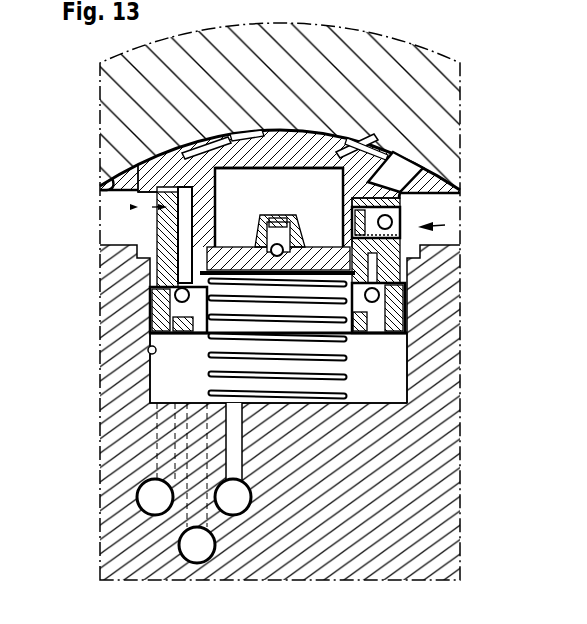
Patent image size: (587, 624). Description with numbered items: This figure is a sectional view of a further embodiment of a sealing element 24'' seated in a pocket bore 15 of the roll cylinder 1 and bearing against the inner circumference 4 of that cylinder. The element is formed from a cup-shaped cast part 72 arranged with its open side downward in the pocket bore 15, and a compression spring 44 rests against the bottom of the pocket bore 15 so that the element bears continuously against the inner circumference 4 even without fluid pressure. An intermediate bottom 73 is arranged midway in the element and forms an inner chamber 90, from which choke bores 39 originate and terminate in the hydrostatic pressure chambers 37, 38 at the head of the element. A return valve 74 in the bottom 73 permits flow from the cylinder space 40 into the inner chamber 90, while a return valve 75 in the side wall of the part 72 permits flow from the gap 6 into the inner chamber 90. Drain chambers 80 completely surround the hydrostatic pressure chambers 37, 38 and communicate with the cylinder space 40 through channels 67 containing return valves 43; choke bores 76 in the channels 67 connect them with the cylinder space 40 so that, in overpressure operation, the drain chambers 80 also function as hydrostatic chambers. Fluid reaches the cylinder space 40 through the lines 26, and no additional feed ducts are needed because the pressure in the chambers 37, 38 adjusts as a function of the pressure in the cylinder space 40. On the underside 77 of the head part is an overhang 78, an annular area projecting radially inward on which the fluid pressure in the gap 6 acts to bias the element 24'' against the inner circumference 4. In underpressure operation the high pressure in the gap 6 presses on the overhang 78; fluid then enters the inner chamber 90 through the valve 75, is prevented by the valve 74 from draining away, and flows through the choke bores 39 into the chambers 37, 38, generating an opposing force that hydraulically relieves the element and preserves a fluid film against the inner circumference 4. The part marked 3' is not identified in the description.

The roll cylinder 1 is at (413, 57).
The housing body 3' is at (459, 324).
The inner circumference 4 is at (108, 188).
The gap 6 is at (118, 220).
The pocket bore 15 is at (148, 350).
The sealing element 24'' is at (465, 225).
The lines 26 is at (187, 545).
The hydrostatic pressure chamber 37 is at (200, 140).
The hydrostatic pressure chamber 38 is at (368, 142).
The choke bores 39 is at (223, 140).
The cylinder space 40 is at (165, 373).
The return valves 43 is at (170, 303).
The compression spring 44 is at (323, 360).
The channels 67 is at (185, 238).
The cup-shaped cast part 72 is at (423, 242).
The intermediate bottom 73 is at (247, 215).
The return valve 74 is at (296, 214).
The return valve 75 is at (398, 210).
The choke bores 76 is at (242, 247).
The underside 77 is at (412, 194).
The overhang 78 is at (130, 207).
The drain chambers 80 is at (152, 157).
The inner chamber 90 is at (313, 168).